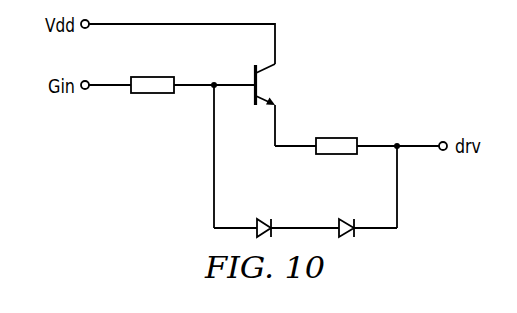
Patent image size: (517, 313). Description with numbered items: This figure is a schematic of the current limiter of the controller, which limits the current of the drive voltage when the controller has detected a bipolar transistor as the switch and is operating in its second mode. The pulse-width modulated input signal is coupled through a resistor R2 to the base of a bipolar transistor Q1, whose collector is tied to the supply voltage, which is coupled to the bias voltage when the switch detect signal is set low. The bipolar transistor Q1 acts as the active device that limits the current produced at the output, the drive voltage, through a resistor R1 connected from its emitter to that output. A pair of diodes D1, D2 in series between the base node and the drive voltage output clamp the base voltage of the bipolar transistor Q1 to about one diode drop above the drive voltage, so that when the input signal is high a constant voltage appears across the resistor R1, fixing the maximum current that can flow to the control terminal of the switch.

The resistor R2 is at (152, 73).
The bipolar transistor Q1 is at (273, 105).
The resistor R1 is at (336, 134).
The diode D1 is at (265, 215).
The diode D2 is at (347, 215).